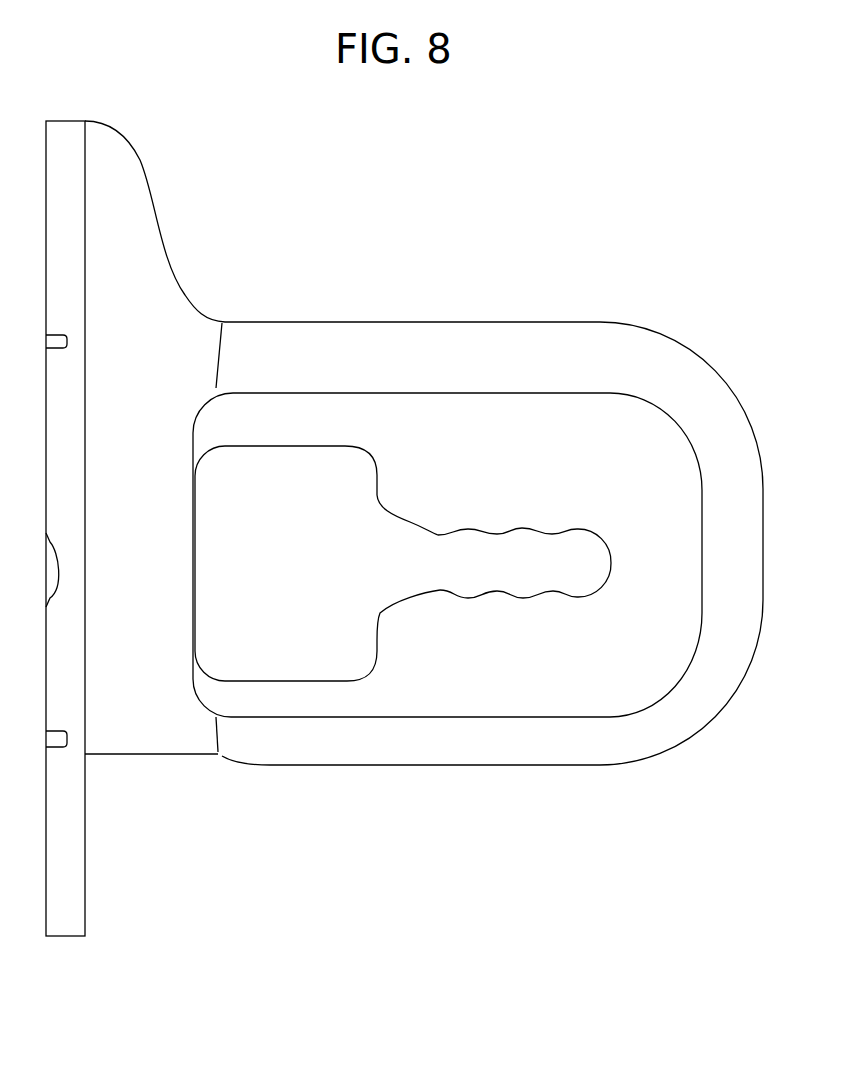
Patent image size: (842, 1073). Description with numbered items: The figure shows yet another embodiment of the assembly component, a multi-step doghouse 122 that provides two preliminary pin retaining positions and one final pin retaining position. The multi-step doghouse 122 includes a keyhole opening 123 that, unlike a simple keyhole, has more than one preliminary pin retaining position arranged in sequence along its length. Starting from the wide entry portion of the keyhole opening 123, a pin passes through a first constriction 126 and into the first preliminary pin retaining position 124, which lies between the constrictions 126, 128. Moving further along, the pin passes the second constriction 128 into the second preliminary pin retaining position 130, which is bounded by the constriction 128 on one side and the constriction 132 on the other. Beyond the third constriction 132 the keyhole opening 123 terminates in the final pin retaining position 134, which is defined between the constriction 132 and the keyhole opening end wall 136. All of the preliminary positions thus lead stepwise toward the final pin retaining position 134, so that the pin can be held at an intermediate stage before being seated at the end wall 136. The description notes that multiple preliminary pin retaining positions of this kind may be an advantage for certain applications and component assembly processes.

The multi-step doghouse 122 is at (630, 260).
The keyhole opening 123 is at (312, 580).
The first preliminary pin retaining position 124 is at (470, 563).
The constriction 126 is at (440, 532).
The constriction 128 is at (497, 533).
The second preliminary pin retaining position 130 is at (525, 567).
The constriction 132 is at (551, 532).
The final pin retaining position 134 is at (583, 563).
The keyhole opening end wall 136 is at (610, 570).